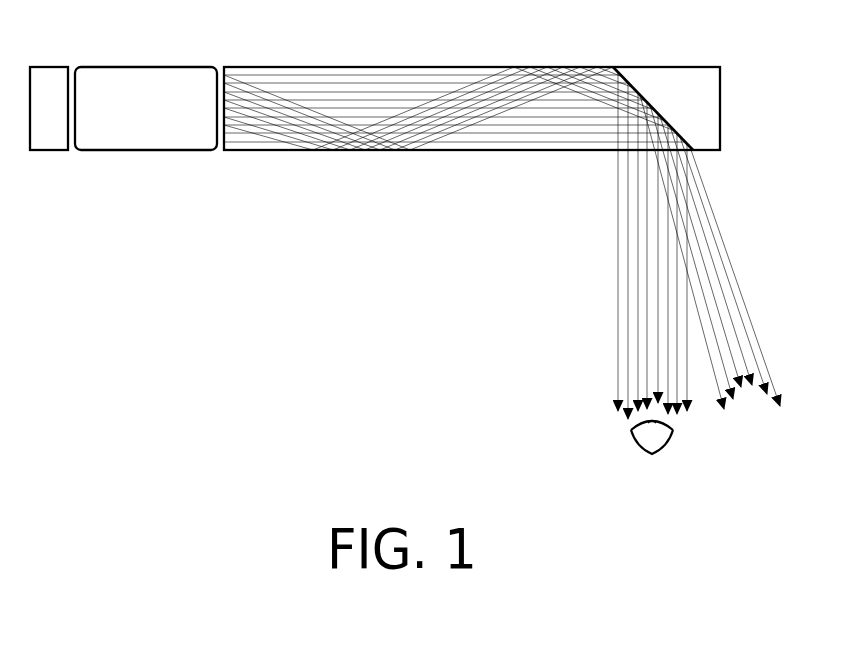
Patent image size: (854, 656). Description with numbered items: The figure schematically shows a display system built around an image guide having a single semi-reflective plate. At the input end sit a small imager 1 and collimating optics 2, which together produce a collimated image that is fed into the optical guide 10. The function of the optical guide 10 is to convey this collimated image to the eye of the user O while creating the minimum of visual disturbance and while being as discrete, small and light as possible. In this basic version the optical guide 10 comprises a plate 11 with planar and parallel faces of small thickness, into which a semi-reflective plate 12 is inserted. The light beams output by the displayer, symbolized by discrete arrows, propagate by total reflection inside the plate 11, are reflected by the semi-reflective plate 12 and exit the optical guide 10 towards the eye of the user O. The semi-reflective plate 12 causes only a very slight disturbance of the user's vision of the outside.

The imager 1 is at (50, 78).
The collimating optics 2 is at (135, 78).
The optical guide 10 is at (502, 216).
The plate 11 is at (384, 83).
The semi-reflective plate 12 is at (654, 93).
The eye of the user O is at (630, 446).